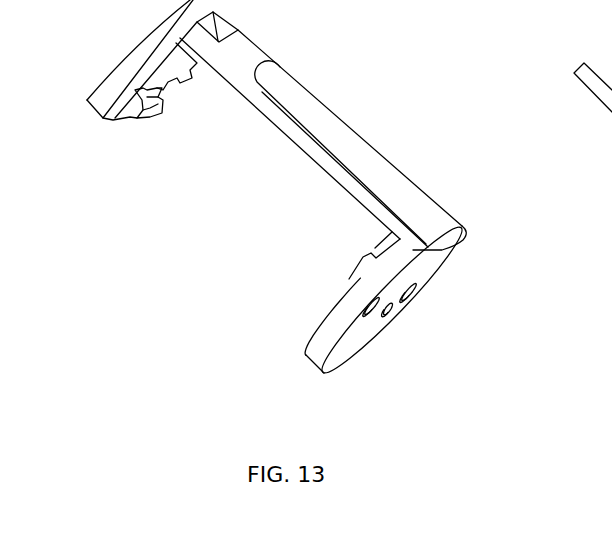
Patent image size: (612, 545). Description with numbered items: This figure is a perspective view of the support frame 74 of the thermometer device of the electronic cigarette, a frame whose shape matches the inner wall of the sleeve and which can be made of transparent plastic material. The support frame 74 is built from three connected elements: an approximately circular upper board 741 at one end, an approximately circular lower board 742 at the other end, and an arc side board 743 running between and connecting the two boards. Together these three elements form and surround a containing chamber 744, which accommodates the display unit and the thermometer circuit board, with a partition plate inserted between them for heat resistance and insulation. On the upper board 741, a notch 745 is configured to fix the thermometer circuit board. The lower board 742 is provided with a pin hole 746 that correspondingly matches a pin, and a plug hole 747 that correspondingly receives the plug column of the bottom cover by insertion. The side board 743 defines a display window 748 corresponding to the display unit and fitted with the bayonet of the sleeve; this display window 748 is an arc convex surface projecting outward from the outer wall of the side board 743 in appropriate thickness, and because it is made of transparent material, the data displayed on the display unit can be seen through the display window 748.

The support frame 74 is at (413, 192).
The upper board 741 is at (108, 103).
The lower board 742 is at (322, 343).
The arc side board 743 is at (247, 56).
The containing chamber 744 is at (262, 165).
The notch 745 is at (152, 100).
The pin hole 746 is at (370, 316).
The plug hole 747 is at (389, 314).
The display window 748 is at (340, 132).